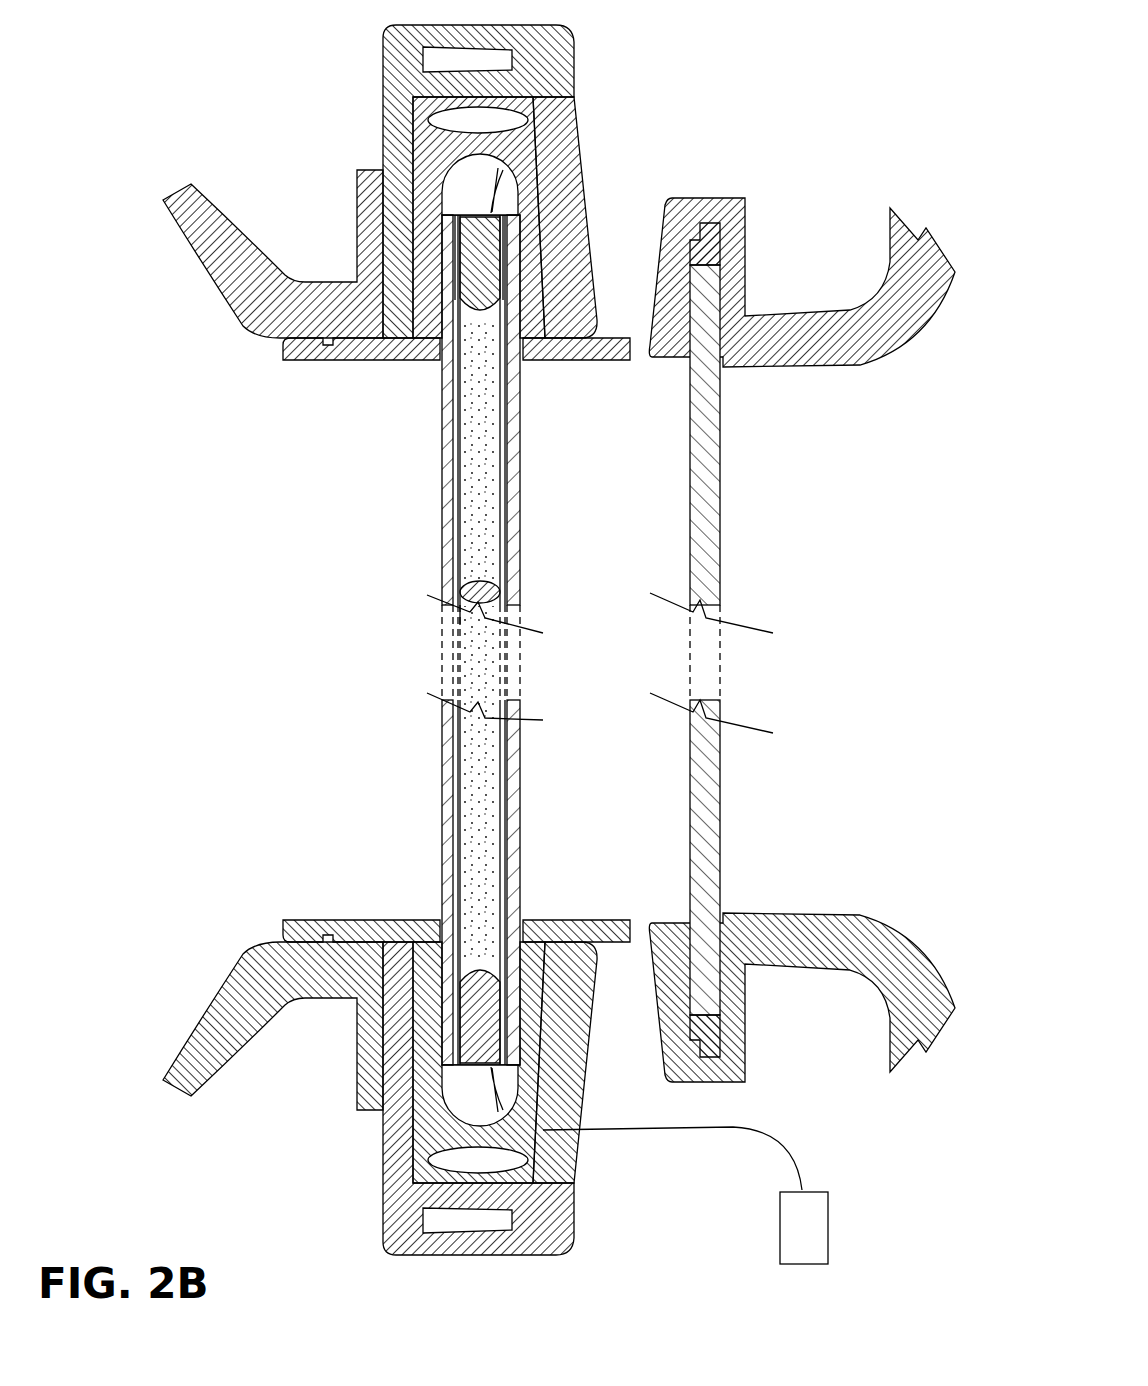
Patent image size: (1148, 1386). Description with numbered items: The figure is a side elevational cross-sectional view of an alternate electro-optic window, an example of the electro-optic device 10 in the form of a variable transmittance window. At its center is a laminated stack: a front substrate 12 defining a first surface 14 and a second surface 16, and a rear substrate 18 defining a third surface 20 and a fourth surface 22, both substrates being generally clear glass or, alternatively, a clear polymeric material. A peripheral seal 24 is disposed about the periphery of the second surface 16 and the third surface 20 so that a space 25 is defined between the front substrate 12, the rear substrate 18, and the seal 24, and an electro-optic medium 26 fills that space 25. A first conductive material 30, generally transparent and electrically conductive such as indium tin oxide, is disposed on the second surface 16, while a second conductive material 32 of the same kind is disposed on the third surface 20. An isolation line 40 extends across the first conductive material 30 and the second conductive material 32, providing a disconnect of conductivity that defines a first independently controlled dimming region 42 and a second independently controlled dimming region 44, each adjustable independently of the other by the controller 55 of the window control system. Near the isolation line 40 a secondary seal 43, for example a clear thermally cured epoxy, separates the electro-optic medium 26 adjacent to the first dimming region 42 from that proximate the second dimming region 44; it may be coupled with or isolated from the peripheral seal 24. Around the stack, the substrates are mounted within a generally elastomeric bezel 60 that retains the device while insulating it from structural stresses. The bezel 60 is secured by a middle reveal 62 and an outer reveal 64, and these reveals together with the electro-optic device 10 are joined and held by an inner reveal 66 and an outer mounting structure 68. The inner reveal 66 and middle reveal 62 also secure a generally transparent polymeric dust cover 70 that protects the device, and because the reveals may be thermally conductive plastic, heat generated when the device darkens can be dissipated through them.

The electro-optic device 10 is at (198, 452).
The front substrate 12 is at (517, 578).
The first surface 14 is at (520, 553).
The second surface 16 is at (503, 530).
The rear substrate 18 is at (448, 578).
The third surface 20 is at (457, 553).
The fourth surface 22 is at (445, 520).
The seal 24 is at (493, 213).
The space 25 is at (490, 842).
The electro-optic medium 26 is at (478, 762).
The first conductive material 30 is at (507, 462).
The second conductive material 32 is at (458, 470).
The isolation line 40 is at (462, 590).
The first independently controlled dimming region 42 is at (600, 830).
The secondary seal 43 is at (462, 612).
The second independently controlled dimming region 44 is at (585, 490).
The controller 55 is at (817, 1190).
The bezel 60 is at (548, 115).
The middle reveal 62 is at (590, 237).
The outer reveal 64 is at (383, 88).
The inner reveal 66 is at (750, 235).
The outer mounting structure 68 is at (215, 230).
The dust cover 70 is at (705, 555).